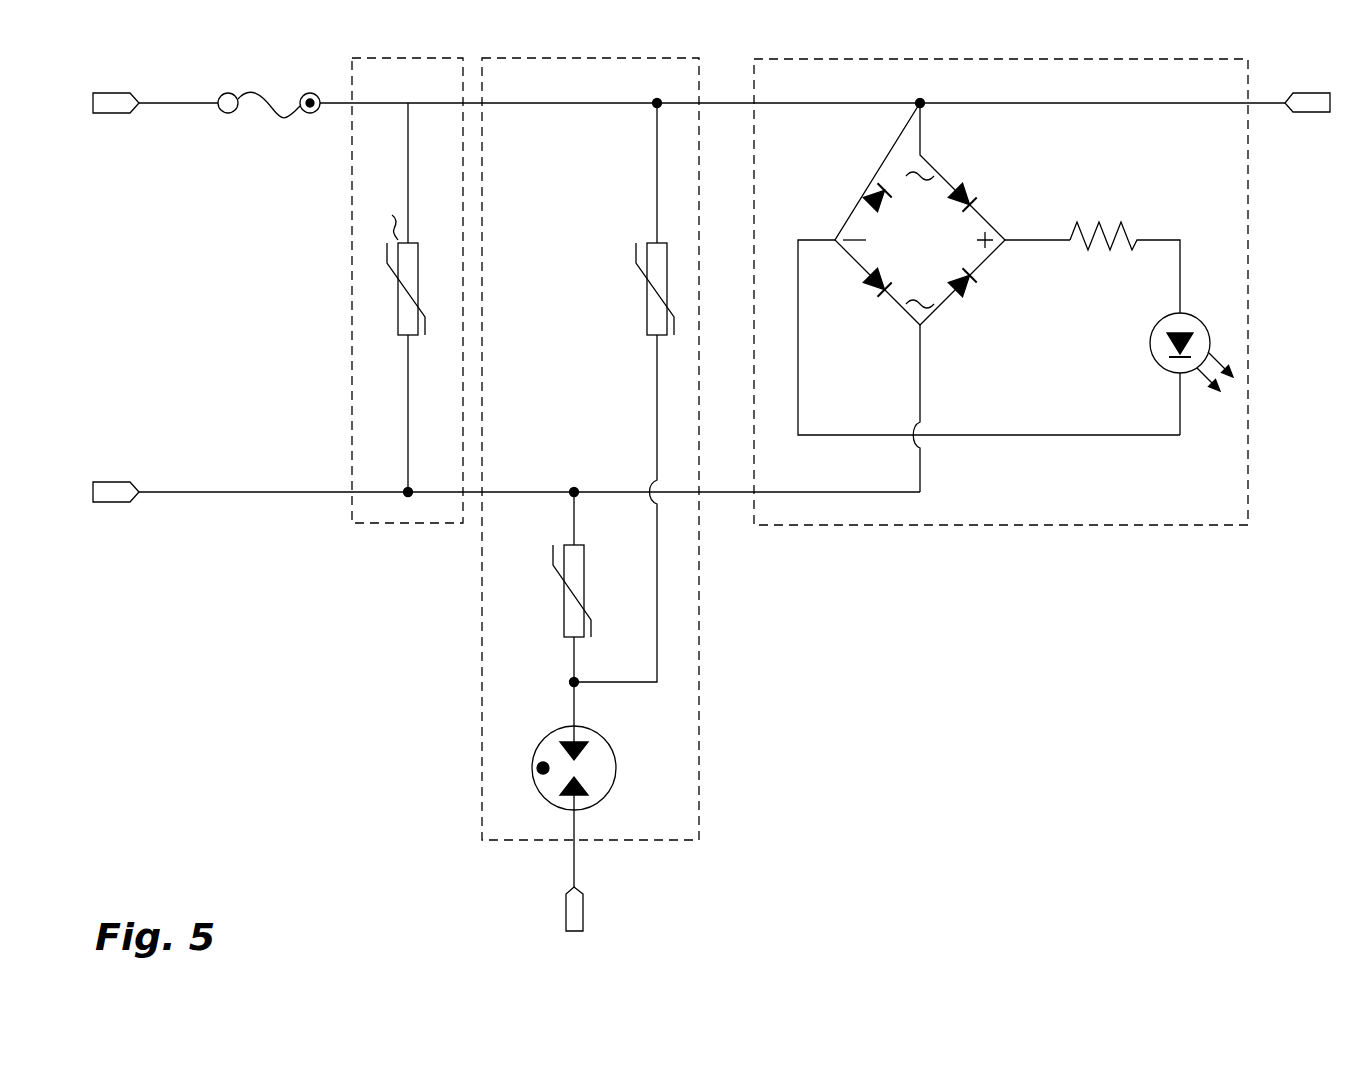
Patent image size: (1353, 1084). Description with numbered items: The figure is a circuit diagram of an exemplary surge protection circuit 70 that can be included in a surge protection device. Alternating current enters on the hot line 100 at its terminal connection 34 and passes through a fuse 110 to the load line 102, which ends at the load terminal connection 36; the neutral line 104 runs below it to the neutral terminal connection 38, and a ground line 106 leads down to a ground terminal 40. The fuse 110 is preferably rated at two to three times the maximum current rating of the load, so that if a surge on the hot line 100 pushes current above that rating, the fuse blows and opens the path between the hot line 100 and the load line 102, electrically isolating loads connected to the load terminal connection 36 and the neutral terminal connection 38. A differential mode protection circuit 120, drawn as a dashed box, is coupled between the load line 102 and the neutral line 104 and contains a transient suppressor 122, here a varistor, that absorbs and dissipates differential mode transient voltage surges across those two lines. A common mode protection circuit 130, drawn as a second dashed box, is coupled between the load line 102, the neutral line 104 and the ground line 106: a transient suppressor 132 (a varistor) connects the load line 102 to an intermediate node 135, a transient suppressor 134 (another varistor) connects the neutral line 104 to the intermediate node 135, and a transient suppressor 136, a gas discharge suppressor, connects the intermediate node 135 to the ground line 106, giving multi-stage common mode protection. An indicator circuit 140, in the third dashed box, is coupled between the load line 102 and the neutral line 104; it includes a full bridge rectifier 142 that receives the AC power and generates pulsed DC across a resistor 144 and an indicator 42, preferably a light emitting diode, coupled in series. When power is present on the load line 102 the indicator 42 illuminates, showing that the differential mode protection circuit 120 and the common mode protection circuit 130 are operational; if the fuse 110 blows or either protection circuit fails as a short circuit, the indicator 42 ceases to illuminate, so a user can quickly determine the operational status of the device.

The terminal connection 34 is at (108, 92).
The load terminal connection 36 is at (1308, 92).
The neutral terminal connection 38 is at (118, 483).
The ground terminal 40 is at (584, 908).
The indicator 42 is at (1156, 355).
The surge protection circuit 70 is at (1172, 660).
The hot line 100 is at (178, 102).
The load line 102 is at (733, 101).
The neutral line 104 is at (248, 492).
The ground line 106 is at (574, 855).
The fuse 110 is at (274, 112).
The differential mode protection circuit 120 is at (352, 248).
The transient suppressor 122 is at (402, 340).
The common mode protection circuit 130 is at (700, 557).
The transient suppressor 132 is at (652, 340).
The transient suppressor 134 is at (578, 542).
The intermediate node 135 is at (572, 680).
The transient suppressor 136 is at (614, 780).
The indicator circuit 140 is at (1078, 527).
The rectifier 142 is at (944, 254).
The resistor 144 is at (1098, 222).